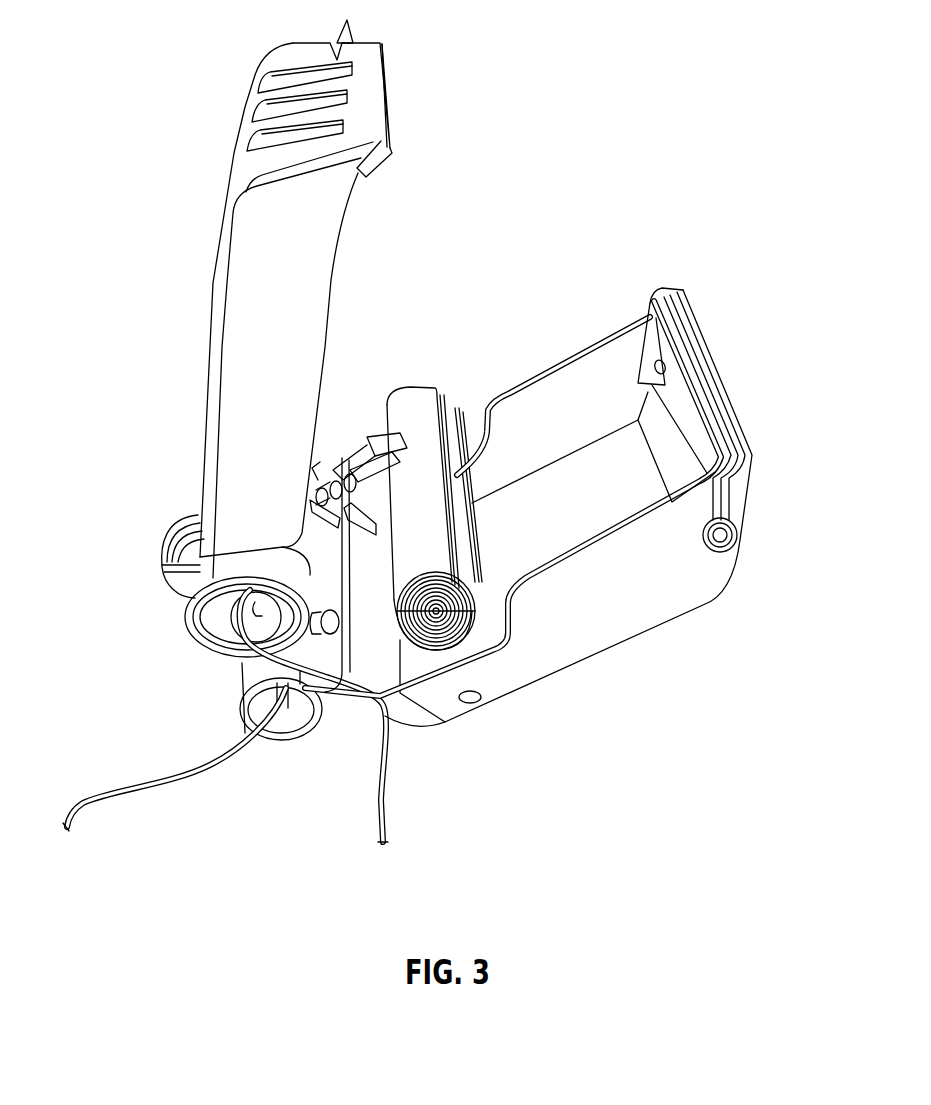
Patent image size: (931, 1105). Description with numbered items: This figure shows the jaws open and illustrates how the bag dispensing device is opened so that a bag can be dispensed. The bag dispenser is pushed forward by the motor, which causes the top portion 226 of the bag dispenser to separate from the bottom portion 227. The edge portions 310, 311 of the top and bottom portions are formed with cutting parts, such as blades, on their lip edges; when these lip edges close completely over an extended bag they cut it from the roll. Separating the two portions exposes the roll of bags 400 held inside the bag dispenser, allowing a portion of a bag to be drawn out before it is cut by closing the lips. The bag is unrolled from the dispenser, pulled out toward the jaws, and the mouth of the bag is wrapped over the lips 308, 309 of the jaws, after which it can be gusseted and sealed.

The lip of the jaw 309 is at (357, 98).
The edge portion of the top portion of the bag dispenser 310 is at (445, 392).
The edge portion of the bottom portion of the bag dispenser 311 is at (462, 415).
The top portion of the bag dispenser 226 is at (398, 407).
The bottom portion of the bag dispenser 227 is at (475, 527).
The lip of the jaw 308 is at (720, 380).
The roll of bags 400 is at (438, 635).